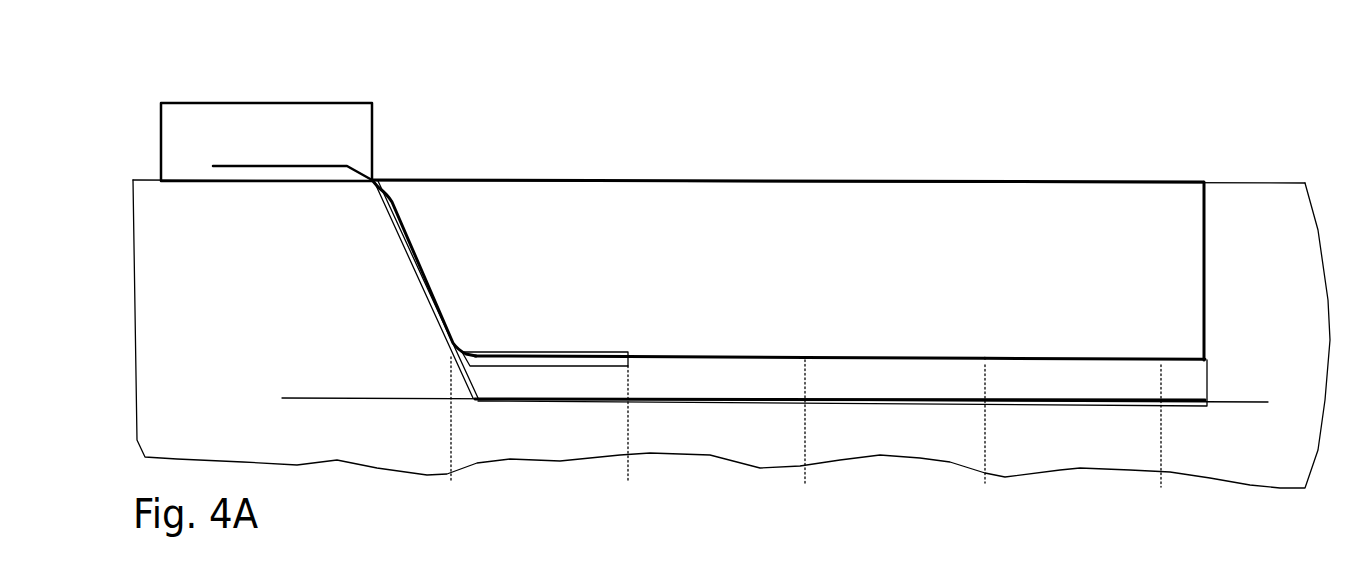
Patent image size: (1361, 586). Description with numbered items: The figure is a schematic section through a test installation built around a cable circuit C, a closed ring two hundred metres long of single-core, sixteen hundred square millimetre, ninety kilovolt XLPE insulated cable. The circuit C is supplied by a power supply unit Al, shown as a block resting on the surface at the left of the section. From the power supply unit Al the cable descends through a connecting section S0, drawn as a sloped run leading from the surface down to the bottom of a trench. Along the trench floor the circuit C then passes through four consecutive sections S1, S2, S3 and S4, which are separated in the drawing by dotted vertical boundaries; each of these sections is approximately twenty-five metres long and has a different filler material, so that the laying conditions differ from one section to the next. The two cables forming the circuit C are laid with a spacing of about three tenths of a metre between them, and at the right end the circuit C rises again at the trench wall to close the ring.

The power supply unit Al is at (232, 96).
The connecting section S0 is at (418, 253).
The first section S1 is at (517, 350).
The second section S2 is at (695, 355).
The third section S3 is at (865, 355).
The fourth section S4 is at (1037, 357).
The cable circuit C is at (1188, 357).